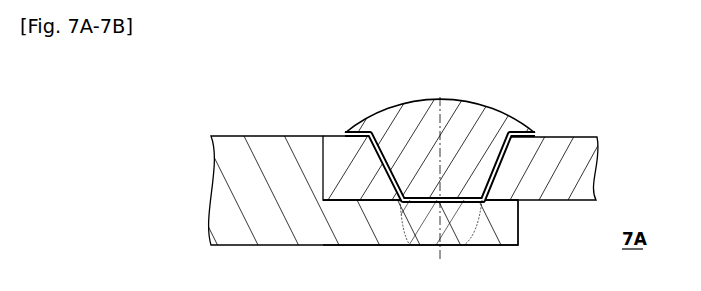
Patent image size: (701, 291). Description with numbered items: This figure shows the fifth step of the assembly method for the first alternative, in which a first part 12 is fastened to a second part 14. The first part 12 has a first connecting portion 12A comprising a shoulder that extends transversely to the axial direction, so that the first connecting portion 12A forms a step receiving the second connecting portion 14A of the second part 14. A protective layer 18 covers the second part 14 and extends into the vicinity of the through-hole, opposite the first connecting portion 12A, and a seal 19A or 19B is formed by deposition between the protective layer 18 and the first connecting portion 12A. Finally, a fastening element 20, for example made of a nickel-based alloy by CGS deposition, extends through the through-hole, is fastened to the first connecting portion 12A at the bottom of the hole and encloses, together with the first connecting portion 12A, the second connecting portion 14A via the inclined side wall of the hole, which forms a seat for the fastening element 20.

The first part 12 is at (243, 147).
The first connecting portion 12A is at (505, 245).
The second part 14 is at (576, 146).
The second connecting portion 14A is at (338, 148).
The protective layer 18 is at (503, 150).
The seal 19A is at (403, 245).
The seal 19B is at (445, 245).
The fastening element 20 is at (421, 117).